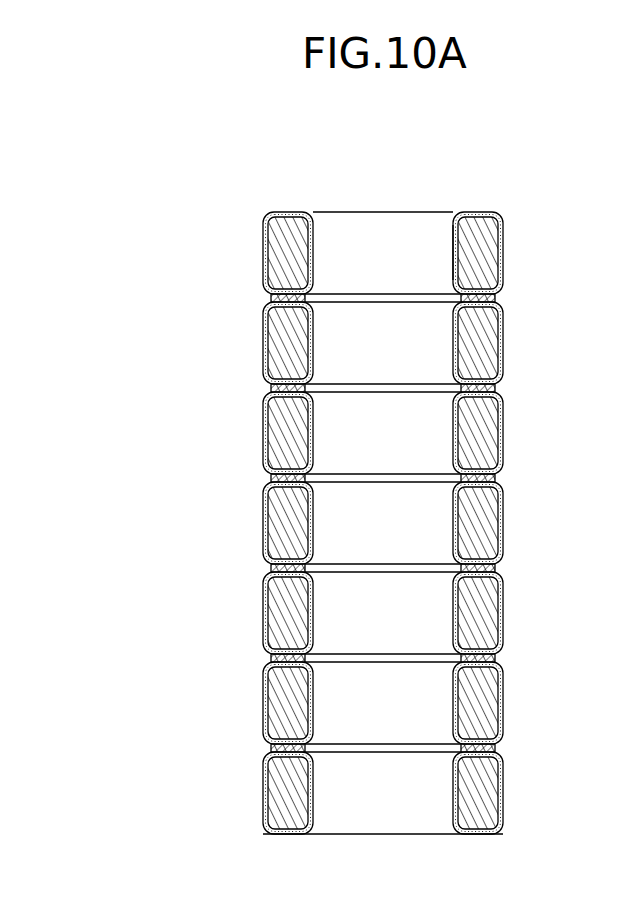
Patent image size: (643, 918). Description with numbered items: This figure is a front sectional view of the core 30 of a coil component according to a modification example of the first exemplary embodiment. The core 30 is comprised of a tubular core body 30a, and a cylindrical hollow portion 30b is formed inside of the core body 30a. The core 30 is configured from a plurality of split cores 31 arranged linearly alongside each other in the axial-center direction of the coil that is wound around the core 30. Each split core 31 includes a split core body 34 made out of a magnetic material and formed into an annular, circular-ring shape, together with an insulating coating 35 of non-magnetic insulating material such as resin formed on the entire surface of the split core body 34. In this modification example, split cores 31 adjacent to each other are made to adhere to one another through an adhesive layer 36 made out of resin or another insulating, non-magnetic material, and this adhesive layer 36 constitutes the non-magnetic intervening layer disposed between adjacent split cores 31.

The core 30 is at (404, 133).
The core body 30a is at (568, 248).
The hollow portion 30b is at (453, 244).
The split core 31 is at (492, 266).
The split core body 34 is at (503, 225).
The insulating coating 35 is at (503, 240).
The adhesive layer 36 is at (455, 258).